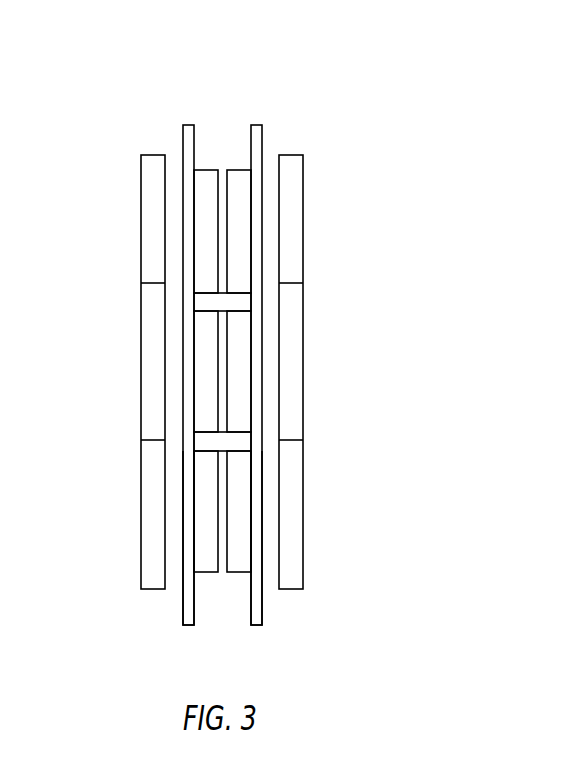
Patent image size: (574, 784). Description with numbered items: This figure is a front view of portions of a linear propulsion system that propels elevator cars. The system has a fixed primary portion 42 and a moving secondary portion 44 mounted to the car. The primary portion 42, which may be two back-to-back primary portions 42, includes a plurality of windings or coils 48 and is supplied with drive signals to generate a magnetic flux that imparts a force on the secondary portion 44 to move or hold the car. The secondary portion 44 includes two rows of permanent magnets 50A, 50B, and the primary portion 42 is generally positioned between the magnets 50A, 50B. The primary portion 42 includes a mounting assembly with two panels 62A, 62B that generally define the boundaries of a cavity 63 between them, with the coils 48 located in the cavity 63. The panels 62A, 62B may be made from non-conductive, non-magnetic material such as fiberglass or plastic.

The primary portion 42 is at (186, 111).
The secondary portion 44 is at (235, 355).
The coils 48 is at (206, 560).
The permanent magnets 50A is at (148, 312).
The permanent magnets 50B is at (296, 312).
The panel 62A is at (183, 518).
The panel 62B is at (260, 518).
The cavity 63 is at (223, 165).